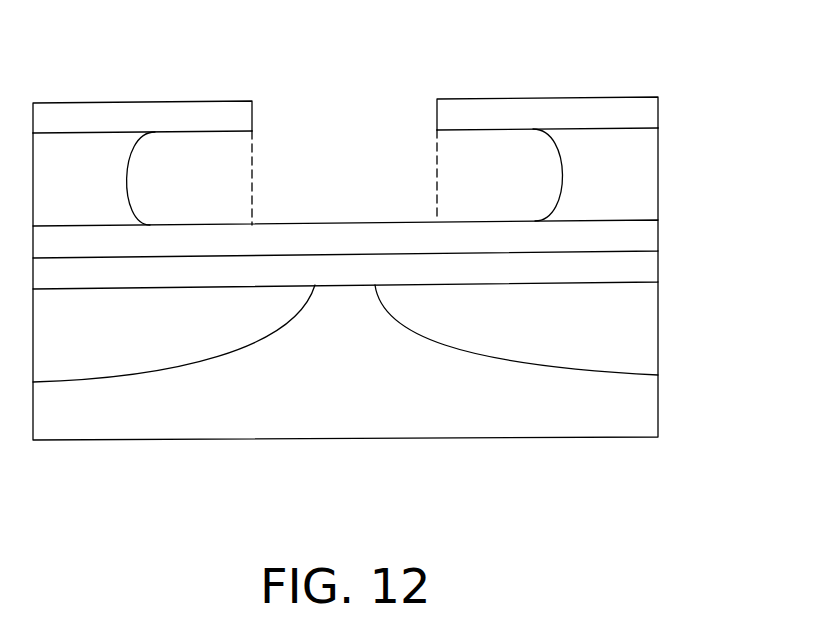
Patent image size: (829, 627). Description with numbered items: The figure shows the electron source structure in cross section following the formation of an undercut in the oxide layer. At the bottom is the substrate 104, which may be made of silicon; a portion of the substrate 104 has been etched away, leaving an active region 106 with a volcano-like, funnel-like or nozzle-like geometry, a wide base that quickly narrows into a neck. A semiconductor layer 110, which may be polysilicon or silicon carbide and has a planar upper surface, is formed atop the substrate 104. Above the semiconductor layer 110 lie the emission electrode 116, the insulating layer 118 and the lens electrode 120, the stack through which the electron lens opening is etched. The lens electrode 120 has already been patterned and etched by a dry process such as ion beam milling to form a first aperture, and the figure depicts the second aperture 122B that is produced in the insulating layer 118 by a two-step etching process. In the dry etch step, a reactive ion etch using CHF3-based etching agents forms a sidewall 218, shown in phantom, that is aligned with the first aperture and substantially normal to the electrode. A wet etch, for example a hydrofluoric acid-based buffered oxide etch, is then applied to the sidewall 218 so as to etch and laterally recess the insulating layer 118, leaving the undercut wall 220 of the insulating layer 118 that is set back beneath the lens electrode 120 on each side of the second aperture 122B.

The substrate 104 is at (633, 407).
The active region 106 is at (345, 323).
The semiconductor layer 110 is at (660, 270).
The emission electrode 116 is at (660, 233).
The insulating layer 118 is at (658, 153).
The lens electrode 120 is at (593, 97).
The sidewall 218 is at (253, 160).
The second aperture 122B is at (387, 123).
The undercut wall 220 is at (550, 207).